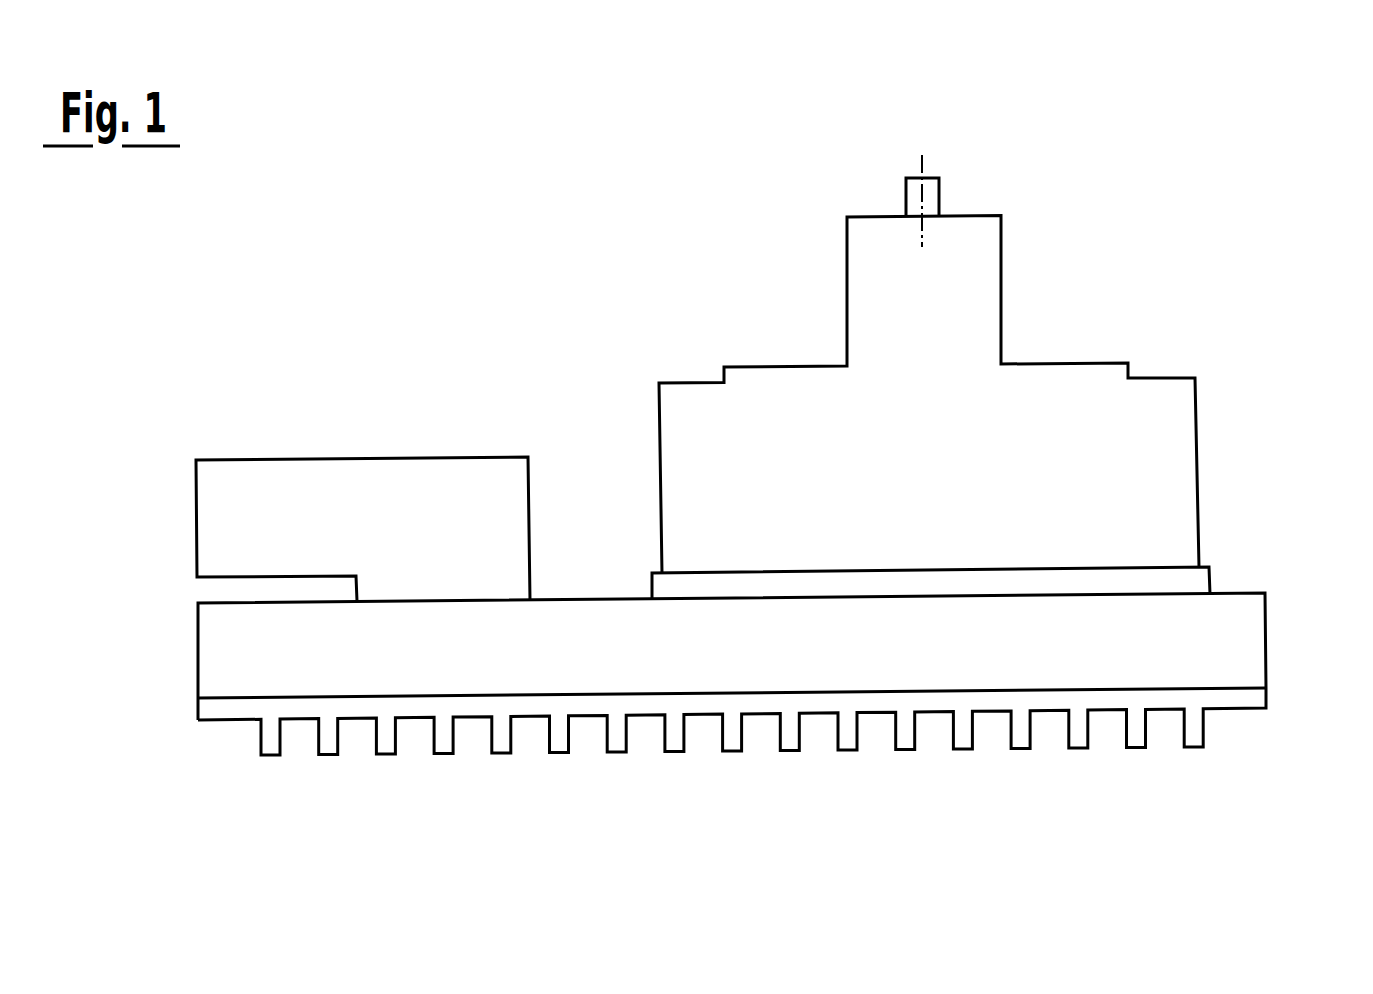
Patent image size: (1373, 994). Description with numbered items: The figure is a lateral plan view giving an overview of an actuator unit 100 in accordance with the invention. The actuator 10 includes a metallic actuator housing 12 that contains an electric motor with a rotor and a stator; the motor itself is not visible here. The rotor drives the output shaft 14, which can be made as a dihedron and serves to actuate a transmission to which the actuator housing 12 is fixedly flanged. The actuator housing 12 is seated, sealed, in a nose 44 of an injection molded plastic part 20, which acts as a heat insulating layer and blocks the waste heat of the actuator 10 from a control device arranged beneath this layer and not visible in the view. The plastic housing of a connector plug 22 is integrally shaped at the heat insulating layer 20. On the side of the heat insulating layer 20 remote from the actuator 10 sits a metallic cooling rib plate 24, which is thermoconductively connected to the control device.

The actuator unit 100 is at (1262, 137).
The actuator 10 is at (1168, 417).
The actuator housing 12 is at (1198, 484).
The output shaft 14 is at (933, 177).
The injection molded plastic part 20 is at (1250, 647).
The connector plug 22 is at (377, 483).
The cooling rib plate 24 is at (1043, 698).
The nose 44 is at (1210, 578).